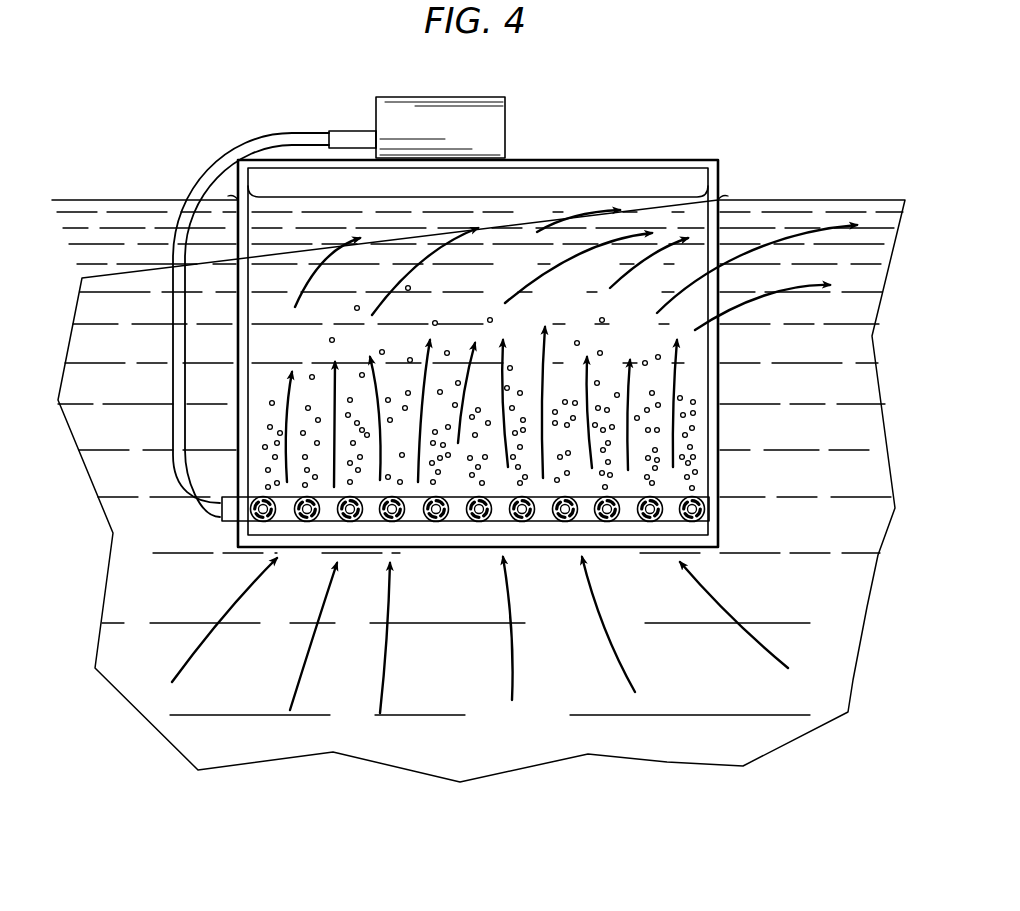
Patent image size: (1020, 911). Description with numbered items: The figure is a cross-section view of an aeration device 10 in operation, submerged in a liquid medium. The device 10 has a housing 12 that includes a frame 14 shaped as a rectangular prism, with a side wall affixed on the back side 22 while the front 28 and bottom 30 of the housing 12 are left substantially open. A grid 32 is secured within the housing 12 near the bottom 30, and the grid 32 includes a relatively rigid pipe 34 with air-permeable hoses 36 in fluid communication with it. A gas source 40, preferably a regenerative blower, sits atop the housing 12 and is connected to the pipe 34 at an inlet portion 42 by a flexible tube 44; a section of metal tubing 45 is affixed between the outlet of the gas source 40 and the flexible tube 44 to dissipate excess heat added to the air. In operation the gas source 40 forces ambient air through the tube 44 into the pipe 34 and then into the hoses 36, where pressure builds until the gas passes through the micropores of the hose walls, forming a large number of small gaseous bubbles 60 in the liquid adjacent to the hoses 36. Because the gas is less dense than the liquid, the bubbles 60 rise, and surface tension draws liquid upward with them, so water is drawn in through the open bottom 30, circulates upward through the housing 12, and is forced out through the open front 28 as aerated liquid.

The device 10 is at (676, 78).
The housing 12 is at (728, 231).
The frame 14 is at (712, 292).
The back side 22 is at (212, 367).
The front 28 is at (762, 404).
The bottom 30 is at (452, 563).
The grid 32 is at (367, 486).
The pipe 34 is at (538, 510).
The air-permeable hose 36 is at (392, 522).
The gas source 40 is at (468, 110).
The inlet portion 42 is at (374, 128).
The flexible tube 44 is at (222, 152).
The section of metal tubing 45 is at (345, 137).
The gaseous bubbles 60 is at (311, 375).